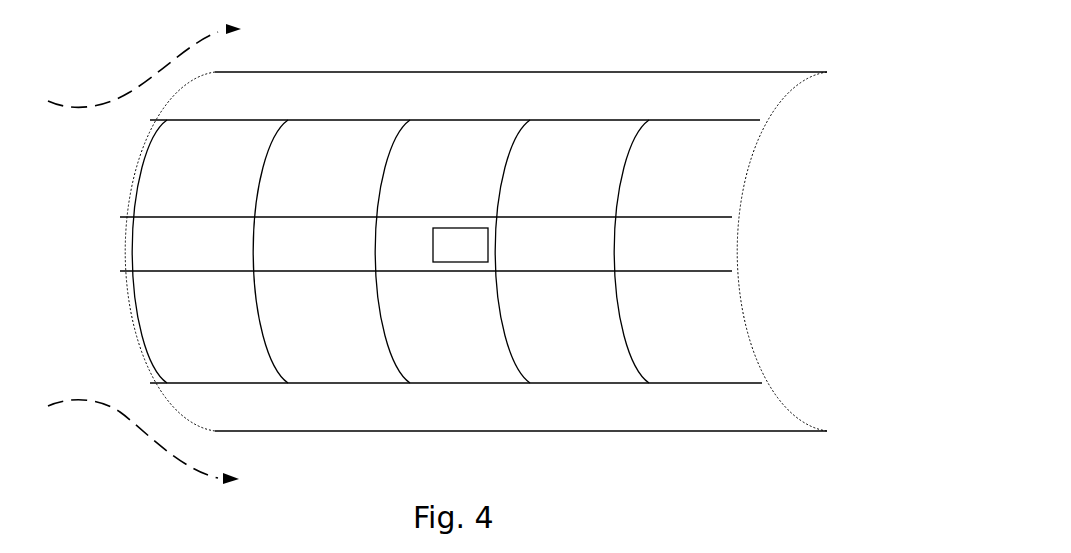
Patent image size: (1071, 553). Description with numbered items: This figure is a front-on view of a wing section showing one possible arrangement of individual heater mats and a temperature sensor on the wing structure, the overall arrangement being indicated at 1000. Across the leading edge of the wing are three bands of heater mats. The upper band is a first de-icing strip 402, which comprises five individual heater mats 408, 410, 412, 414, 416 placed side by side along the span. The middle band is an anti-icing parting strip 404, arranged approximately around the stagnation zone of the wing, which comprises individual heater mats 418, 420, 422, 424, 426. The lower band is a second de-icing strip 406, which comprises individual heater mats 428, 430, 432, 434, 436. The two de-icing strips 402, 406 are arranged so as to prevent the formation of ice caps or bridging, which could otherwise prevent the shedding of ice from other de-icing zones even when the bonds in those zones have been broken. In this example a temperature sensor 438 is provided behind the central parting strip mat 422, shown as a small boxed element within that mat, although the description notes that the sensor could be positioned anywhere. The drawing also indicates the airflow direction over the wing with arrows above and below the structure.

The sensor arrangement 1000 is at (695, 33).
The first de-icing strip 402 is at (740, 172).
The anti-icing parting strip 404 is at (729, 245).
The second de-icing strip 406 is at (738, 319).
The heater mat 408 is at (209, 181).
The heater mat 410 is at (331, 181).
The heater mat 412 is at (451, 181).
The heater mat 414 is at (571, 181).
The heater mat 416 is at (689, 181).
The heater mat 418 is at (194, 253).
The heater mat 420 is at (321, 253).
The central parting strip mat 422 is at (414, 253).
The heater mat 424 is at (559, 253).
The heater mat 426 is at (674, 253).
The heater mat 428 is at (209, 336).
The heater mat 430 is at (334, 336).
The heater mat 432 is at (449, 336).
The heater mat 434 is at (572, 336).
The heater mat 436 is at (692, 336).
The temperature sensor 438 is at (474, 253).